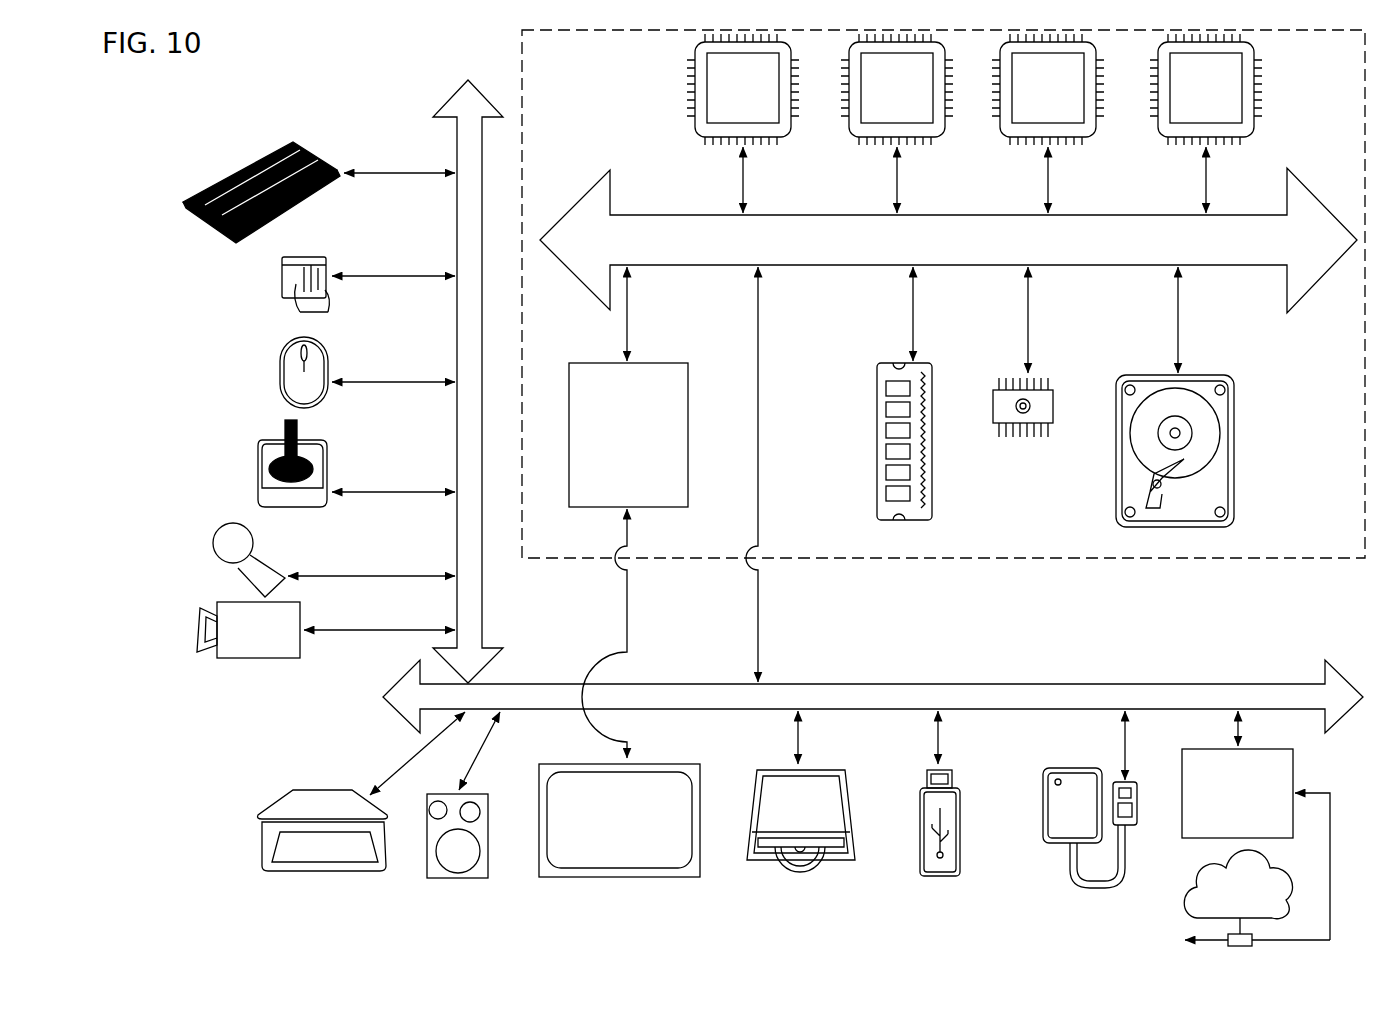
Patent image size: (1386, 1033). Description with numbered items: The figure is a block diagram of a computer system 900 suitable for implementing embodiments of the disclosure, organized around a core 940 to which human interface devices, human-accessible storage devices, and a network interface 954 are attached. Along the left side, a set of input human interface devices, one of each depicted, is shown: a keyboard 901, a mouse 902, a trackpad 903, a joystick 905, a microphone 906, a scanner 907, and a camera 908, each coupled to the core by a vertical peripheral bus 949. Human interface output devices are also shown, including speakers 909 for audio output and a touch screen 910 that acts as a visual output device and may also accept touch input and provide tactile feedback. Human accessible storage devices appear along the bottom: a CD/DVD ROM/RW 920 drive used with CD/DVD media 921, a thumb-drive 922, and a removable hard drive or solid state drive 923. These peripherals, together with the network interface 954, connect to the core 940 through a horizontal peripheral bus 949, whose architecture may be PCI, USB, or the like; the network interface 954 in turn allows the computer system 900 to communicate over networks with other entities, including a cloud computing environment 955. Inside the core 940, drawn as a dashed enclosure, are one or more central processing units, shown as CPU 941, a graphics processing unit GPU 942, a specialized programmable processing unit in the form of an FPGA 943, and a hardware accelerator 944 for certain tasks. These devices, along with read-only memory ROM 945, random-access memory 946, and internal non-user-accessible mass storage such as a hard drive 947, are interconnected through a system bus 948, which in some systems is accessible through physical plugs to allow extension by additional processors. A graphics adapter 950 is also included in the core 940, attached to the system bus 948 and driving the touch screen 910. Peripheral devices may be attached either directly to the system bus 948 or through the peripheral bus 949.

The computer system 900 is at (249, 79).
The keyboard 901 is at (183, 203).
The mouse 902 is at (275, 374).
The trackpad 903 is at (275, 290).
The joystick 905 is at (258, 492).
The microphone 906 is at (213, 545).
The scanner 907 is at (265, 858).
The camera 908 is at (200, 630).
The speakers 909 is at (458, 880).
The touch screen 910 is at (610, 879).
The CD/DVD ROM/RW 920 is at (840, 866).
The CD/DVD media 921 is at (783, 870).
The thumb-drive 922 is at (938, 878).
The removable hard drive or solid state drive 923 is at (1045, 845).
The core 940 is at (965, 562).
The Central Processing Unit (CPU) 941 is at (722, 114).
The Graphics Processing Unit (GPU) 942 is at (876, 114).
The Field Programmable Gate Array (FPGA) 943 is at (1027, 114).
The hardware accelerator 944 is at (1185, 114).
The Read-only memory (ROM) 945 is at (1010, 437).
The Random-access memory 946 is at (877, 438).
The internal mass storage 947 is at (1135, 375).
The system bus 948 is at (1086, 252).
The peripheral bus 949 is at (457, 116).
The graphics adapter 950 is at (606, 492).
The network interface 954 is at (1237, 774).
The cloud computing environment 955 is at (1190, 905).